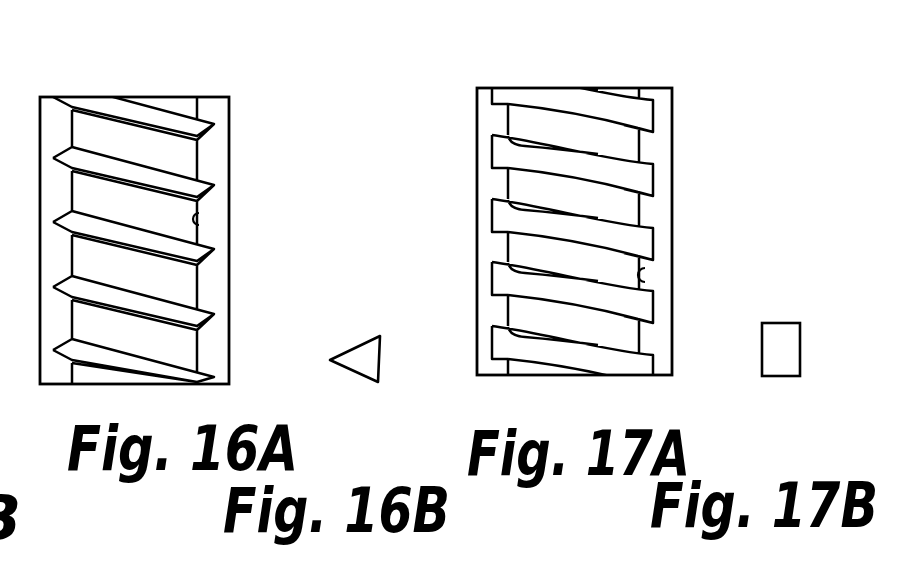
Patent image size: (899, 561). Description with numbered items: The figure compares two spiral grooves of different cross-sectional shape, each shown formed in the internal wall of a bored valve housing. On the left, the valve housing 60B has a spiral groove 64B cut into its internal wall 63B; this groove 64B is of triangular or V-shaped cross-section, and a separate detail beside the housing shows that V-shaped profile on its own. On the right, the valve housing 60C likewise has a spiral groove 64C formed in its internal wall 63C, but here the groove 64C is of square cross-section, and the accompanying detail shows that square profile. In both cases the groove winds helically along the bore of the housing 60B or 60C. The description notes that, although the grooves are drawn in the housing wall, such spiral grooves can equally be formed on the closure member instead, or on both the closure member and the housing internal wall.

In FIG. 16A, the valve housing 60B is at (215, 160).
In FIG. 16A, the spiral groove 64B is at (196, 126).
In FIG. 16B, the spiral groove 64B is at (365, 357).
In FIG. 16A, the internal wall 63B is at (193, 227).
In FIG. 17A, the valve housing 60C is at (675, 202).
In FIG. 17A, the spiral groove 64C is at (642, 117).
In FIG. 17B, the spiral groove 64C is at (782, 335).
In FIG. 17A, the internal wall 63C is at (645, 281).